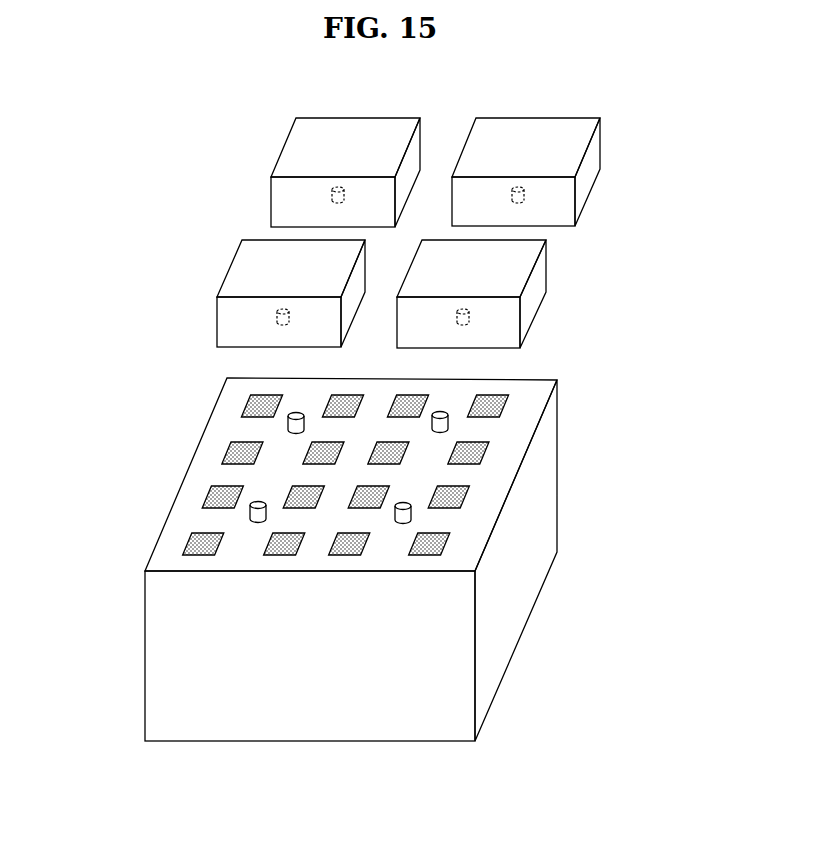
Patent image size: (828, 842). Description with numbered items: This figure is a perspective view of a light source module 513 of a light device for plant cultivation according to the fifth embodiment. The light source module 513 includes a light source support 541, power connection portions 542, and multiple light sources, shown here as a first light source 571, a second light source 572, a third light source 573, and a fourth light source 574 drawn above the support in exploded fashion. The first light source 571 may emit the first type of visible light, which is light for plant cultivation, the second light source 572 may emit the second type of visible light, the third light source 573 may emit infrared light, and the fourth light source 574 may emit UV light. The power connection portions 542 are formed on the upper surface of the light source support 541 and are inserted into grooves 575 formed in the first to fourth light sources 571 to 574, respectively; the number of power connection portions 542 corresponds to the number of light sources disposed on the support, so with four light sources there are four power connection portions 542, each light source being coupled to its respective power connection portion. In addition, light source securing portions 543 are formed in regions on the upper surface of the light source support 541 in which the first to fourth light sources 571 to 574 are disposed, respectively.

The light source module 513 is at (100, 93).
The light source support 541 is at (162, 655).
The power connection portions 542 is at (250, 516).
The light source securing portions 543 is at (484, 452).
The first light source 571 is at (282, 125).
The second light source 572 is at (622, 134).
The third light source 573 is at (212, 267).
The fourth light source 574 is at (560, 270).
The grooves 575 is at (330, 192).